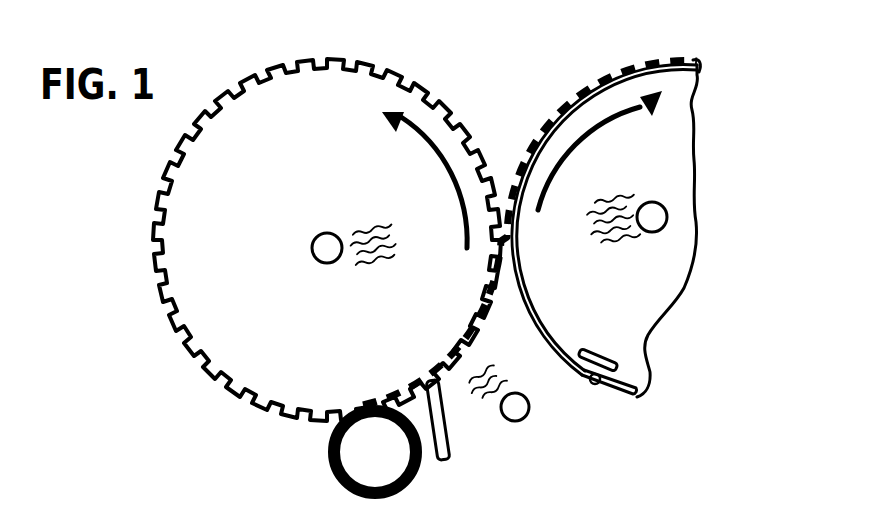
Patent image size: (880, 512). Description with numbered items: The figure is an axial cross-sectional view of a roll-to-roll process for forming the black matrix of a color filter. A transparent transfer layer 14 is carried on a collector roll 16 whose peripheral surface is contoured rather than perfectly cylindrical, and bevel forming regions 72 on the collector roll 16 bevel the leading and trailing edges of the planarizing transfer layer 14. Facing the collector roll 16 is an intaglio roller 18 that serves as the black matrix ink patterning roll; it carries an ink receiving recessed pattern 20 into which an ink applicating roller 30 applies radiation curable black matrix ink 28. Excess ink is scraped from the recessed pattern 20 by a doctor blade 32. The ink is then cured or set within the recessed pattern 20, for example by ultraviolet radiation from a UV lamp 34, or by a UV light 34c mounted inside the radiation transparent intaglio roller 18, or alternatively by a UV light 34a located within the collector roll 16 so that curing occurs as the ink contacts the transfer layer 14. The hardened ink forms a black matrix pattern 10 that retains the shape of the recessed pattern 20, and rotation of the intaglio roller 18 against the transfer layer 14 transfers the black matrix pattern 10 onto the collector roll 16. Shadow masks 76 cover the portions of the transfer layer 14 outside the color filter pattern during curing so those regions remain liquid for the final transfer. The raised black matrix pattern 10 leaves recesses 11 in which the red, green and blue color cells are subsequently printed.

The black matrix pattern 10 is at (568, 92).
The recesses 11 is at (668, 60).
The transparent transfer layer 14 is at (613, 395).
The collector roll 16 is at (634, 265).
The intaglio roller 18 is at (300, 240).
The recessed pattern 20 is at (165, 258).
The black matrix ink 28 is at (340, 455).
The ink applicating roller 30 is at (375, 452).
The doctor blade 32 is at (445, 460).
The UV lamp 34 is at (527, 416).
The UV light 34a is at (667, 222).
The UV light 34c is at (318, 262).
The bevel forming regions 72 is at (592, 386).
The shadow masks 76 is at (596, 350).